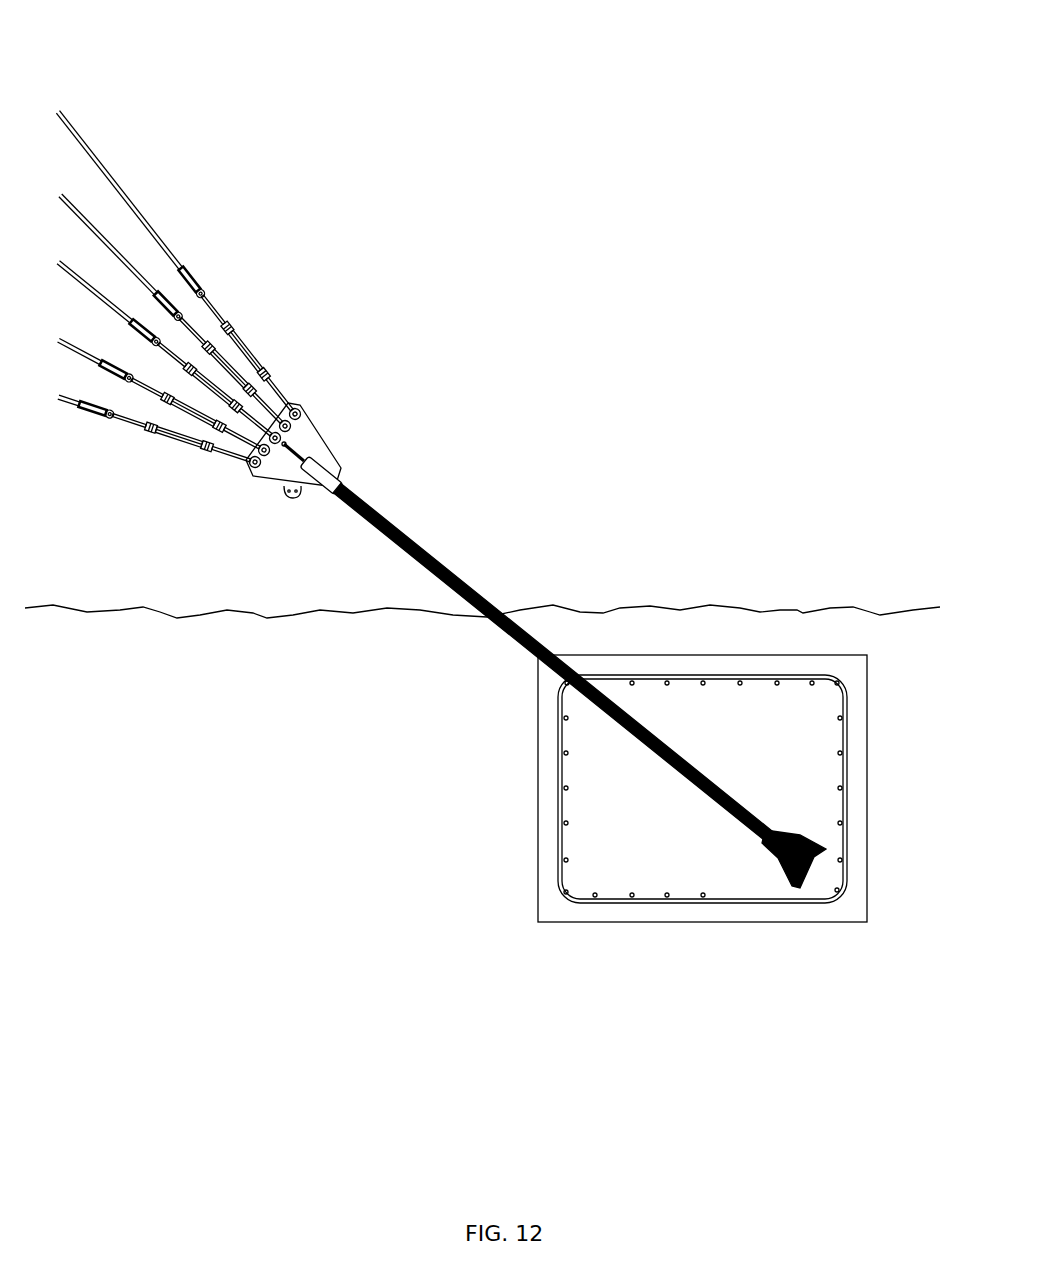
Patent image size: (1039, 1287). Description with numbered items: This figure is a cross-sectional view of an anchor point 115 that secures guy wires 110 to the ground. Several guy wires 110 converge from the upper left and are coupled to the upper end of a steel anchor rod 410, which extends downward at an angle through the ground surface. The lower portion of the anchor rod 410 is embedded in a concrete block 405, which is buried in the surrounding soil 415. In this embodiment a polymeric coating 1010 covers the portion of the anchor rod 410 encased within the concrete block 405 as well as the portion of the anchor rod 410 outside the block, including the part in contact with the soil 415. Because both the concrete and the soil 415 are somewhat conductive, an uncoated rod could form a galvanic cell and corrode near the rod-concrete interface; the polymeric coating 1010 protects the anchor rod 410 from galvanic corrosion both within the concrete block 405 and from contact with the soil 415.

The anchor point 115 is at (697, 38).
The guy wires 110 is at (102, 160).
The anchor rod 410 is at (482, 553).
The polymeric coating 1010 is at (423, 563).
The concrete block 405 is at (776, 746).
The soil 415 is at (928, 741).